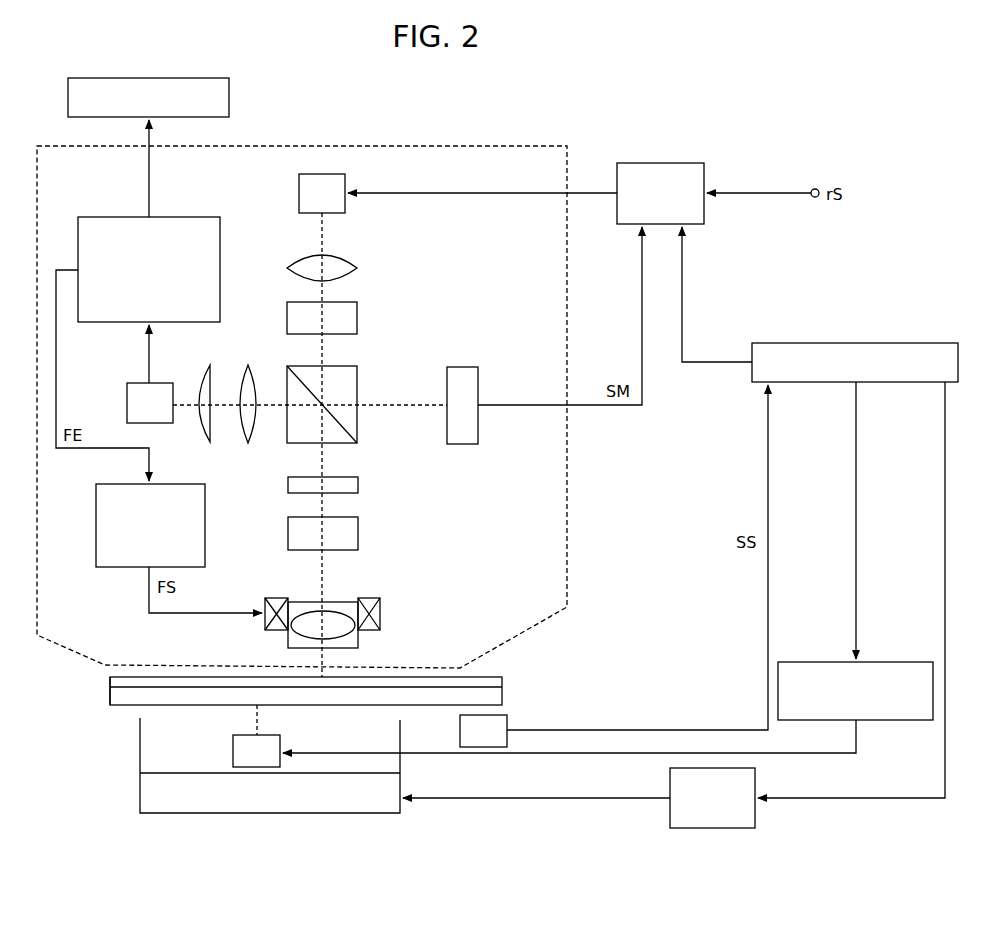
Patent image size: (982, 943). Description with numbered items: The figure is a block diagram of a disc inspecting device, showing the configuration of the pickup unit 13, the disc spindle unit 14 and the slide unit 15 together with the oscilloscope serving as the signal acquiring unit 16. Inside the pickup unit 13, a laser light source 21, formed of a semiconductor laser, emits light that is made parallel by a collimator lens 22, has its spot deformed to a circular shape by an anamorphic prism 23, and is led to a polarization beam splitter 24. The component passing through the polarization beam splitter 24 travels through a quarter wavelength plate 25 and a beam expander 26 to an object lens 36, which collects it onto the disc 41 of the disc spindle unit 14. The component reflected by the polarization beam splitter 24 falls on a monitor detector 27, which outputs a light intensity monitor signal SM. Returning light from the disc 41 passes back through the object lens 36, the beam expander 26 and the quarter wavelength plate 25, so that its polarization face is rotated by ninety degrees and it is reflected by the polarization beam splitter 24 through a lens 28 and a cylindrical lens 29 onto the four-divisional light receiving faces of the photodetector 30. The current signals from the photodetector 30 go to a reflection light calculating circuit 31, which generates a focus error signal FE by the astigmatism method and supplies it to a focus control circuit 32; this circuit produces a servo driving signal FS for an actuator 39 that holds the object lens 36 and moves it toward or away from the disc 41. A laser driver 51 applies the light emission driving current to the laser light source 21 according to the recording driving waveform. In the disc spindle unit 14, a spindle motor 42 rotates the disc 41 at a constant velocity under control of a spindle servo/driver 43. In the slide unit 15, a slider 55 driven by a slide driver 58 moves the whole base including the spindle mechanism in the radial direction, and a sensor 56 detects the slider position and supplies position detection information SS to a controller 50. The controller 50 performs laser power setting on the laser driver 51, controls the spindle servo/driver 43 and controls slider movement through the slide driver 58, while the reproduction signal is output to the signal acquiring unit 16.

The pickup unit 13 is at (560, 109).
The disc spindle unit 14 is at (94, 685).
The slide unit 15 is at (95, 794).
The signal acquiring unit 16 is at (229, 97).
The laser light source 21 is at (341, 174).
The collimator lens 22 is at (350, 265).
The anamorphic prism 23 is at (340, 302).
The polarization beam splitter 24 is at (340, 366).
The λ/4 wavelength plate 25 is at (358, 483).
The beam expander 26 is at (358, 530).
The monitor detector 27 is at (465, 367).
The lens 28 is at (248, 365).
The cylindrical lens 29 is at (198, 368).
The photodetector 30 is at (127, 385).
The reflection light calculating circuit 31 is at (188, 217).
The focus control circuit 32 is at (205, 512).
The object lens 36 is at (358, 640).
The actuator 39 is at (382, 612).
The disc 41 is at (118, 705).
The spindle motor 42 is at (233, 750).
The spindle servo/driver 43 is at (900, 662).
The controller 50 is at (922, 343).
The laser driver 51 is at (670, 163).
The slider 55 is at (140, 793).
The sensor 56 is at (755, 780).
The slide driver 58 is at (507, 720).